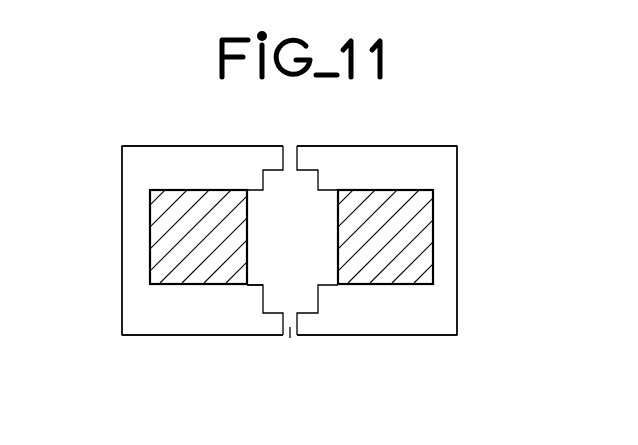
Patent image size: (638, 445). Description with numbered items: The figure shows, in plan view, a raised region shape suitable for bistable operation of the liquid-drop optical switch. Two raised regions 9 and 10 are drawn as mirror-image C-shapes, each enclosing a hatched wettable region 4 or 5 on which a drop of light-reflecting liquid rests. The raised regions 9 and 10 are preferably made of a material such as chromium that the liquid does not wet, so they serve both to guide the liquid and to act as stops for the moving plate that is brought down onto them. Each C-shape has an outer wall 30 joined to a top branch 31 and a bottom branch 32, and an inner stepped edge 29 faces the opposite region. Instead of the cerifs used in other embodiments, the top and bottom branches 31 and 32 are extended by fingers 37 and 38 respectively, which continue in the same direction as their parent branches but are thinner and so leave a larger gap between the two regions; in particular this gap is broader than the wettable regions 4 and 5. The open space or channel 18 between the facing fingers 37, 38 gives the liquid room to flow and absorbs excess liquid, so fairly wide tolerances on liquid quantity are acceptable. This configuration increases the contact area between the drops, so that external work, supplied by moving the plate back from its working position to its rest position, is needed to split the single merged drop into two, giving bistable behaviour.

The wettable region 4 is at (178, 204).
The wettable region 5 is at (407, 205).
The raised region 9 is at (108, 241).
The raised region 10 is at (470, 285).
The channel 18 is at (289, 328).
The stepped inner edge 29 is at (268, 277).
The outer side wall of yoke 30 is at (131, 229).
The top branch 31 is at (189, 146).
The bottom branch 32 is at (185, 337).
The finger 37 is at (270, 146).
The finger 38 is at (263, 335).